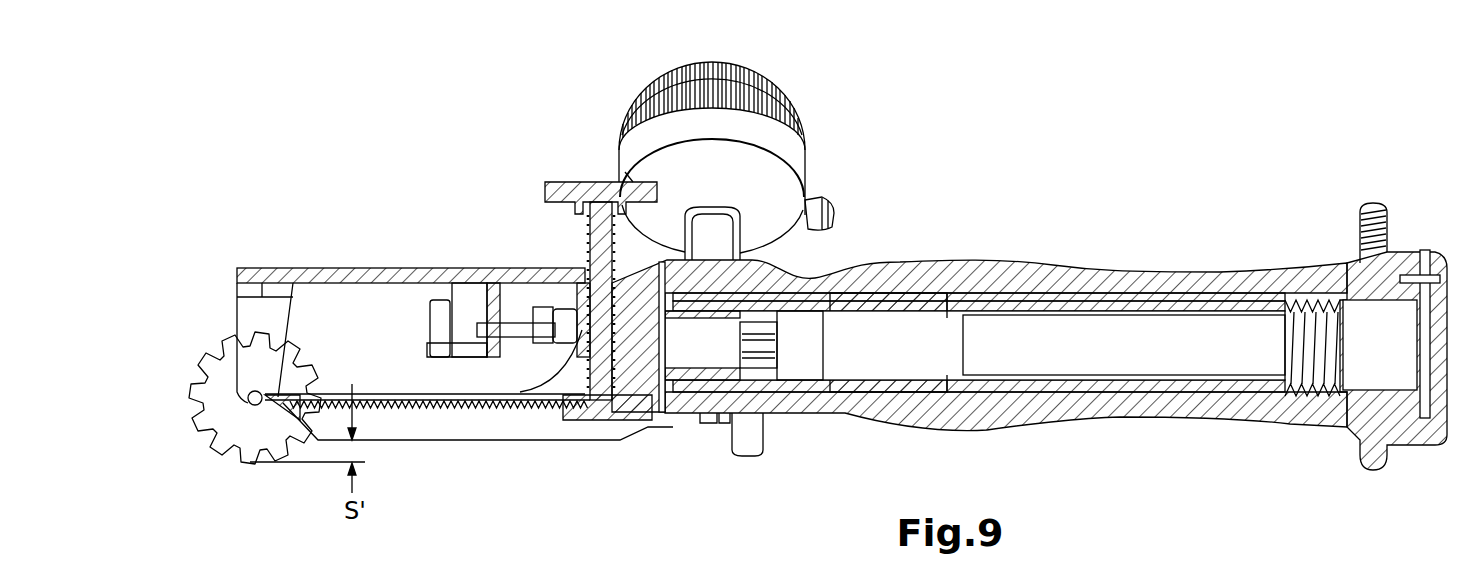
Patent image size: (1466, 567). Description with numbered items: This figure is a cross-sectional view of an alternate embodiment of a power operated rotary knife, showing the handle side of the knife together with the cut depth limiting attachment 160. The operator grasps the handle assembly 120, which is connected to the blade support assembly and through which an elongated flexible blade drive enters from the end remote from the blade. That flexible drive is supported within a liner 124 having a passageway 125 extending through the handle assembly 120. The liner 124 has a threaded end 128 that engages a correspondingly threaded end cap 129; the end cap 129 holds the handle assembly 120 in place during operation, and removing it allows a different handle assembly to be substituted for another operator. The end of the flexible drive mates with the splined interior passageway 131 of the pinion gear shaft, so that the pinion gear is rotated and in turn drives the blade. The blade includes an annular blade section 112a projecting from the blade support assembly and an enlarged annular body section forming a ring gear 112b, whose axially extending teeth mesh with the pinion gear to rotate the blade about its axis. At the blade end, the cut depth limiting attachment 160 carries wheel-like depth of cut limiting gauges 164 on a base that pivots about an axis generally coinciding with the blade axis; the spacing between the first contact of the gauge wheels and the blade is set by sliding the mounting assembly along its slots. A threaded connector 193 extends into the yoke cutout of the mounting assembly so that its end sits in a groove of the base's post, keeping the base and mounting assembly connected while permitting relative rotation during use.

The cut depth limiting attachment 160 is at (330, 247).
The threaded connector 193 is at (512, 330).
The ring gear 112b is at (410, 400).
The annular blade section 112a is at (475, 428).
The depth of cut limiting gauge 164 is at (213, 413).
The splined interior passageway 131 is at (757, 327).
The handle assembly 120 is at (1050, 262).
The passageway 125 is at (1146, 357).
The liner 124 is at (1063, 315).
The threaded end 128 is at (1290, 307).
The end cap 129 is at (1402, 252).